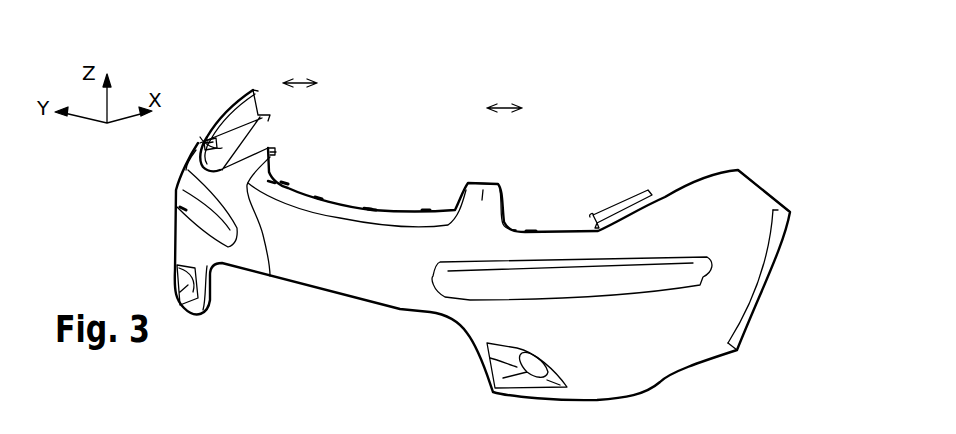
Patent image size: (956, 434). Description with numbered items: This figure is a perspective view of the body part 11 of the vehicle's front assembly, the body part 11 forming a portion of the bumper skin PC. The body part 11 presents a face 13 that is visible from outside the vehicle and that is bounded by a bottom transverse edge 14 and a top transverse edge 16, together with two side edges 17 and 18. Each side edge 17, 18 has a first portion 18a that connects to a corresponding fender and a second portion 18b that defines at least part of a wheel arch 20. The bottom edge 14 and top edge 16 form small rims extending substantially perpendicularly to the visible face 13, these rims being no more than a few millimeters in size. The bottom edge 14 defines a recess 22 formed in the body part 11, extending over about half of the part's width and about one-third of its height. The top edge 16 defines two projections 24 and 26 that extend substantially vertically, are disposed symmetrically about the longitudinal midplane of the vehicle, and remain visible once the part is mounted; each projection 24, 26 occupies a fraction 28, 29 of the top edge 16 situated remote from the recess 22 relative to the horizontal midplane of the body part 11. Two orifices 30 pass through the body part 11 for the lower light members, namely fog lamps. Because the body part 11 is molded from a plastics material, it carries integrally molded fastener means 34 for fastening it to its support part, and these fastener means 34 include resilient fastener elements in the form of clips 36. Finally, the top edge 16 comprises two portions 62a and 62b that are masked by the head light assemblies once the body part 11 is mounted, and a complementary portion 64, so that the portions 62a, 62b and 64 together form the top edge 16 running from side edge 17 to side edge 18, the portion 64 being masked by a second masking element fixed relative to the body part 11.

The body part 11 is at (793, 267).
The face 13 is at (357, 238).
The bottom transverse edge 14 is at (537, 397).
The top transverse edge 16 is at (391, 214).
The side edge 17 is at (785, 184).
The side edge 18 is at (231, 73).
The first portion 18a is at (265, 86).
The second portion 18b is at (273, 136).
The wheel arch 20 is at (777, 308).
The recess 22 is at (338, 317).
The projection 24 is at (498, 184).
The projection 26 is at (202, 138).
The fraction of the top edge 28 is at (507, 106).
The fraction of the top edge 29 is at (301, 82).
The orifice 30 is at (177, 270).
The fastener means 34 is at (325, 210).
The clip 36 is at (318, 197).
The masked portion of the top edge 62a is at (637, 220).
The masked portion of the top edge 62b is at (207, 127).
The portion of the top edge 64 is at (273, 182).
The bumper skin PC is at (707, 390).